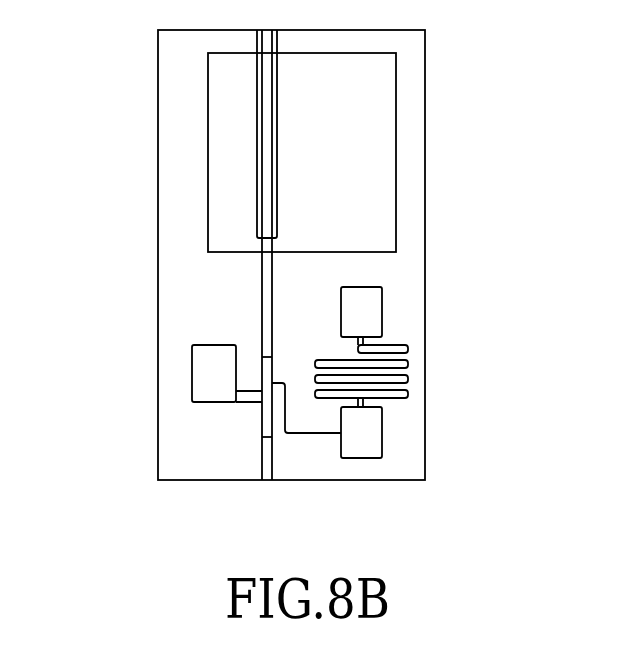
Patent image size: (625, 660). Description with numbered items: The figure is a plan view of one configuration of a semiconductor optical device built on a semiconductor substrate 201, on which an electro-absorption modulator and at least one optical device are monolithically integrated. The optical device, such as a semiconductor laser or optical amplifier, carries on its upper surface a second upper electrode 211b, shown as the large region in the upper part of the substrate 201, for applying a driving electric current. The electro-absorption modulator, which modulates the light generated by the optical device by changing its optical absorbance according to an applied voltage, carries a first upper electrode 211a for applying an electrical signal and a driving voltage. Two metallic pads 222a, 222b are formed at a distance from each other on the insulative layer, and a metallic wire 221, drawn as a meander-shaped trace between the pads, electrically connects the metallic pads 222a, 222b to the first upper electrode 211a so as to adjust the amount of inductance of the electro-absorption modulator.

The semiconductor substrate 201 is at (417, 182).
The first upper electrode 211a is at (208, 373).
The second upper electrode 211b is at (217, 180).
The metallic wire 221 is at (320, 433).
The metallic pad 222a is at (375, 434).
The metallic pad 222b is at (375, 312).